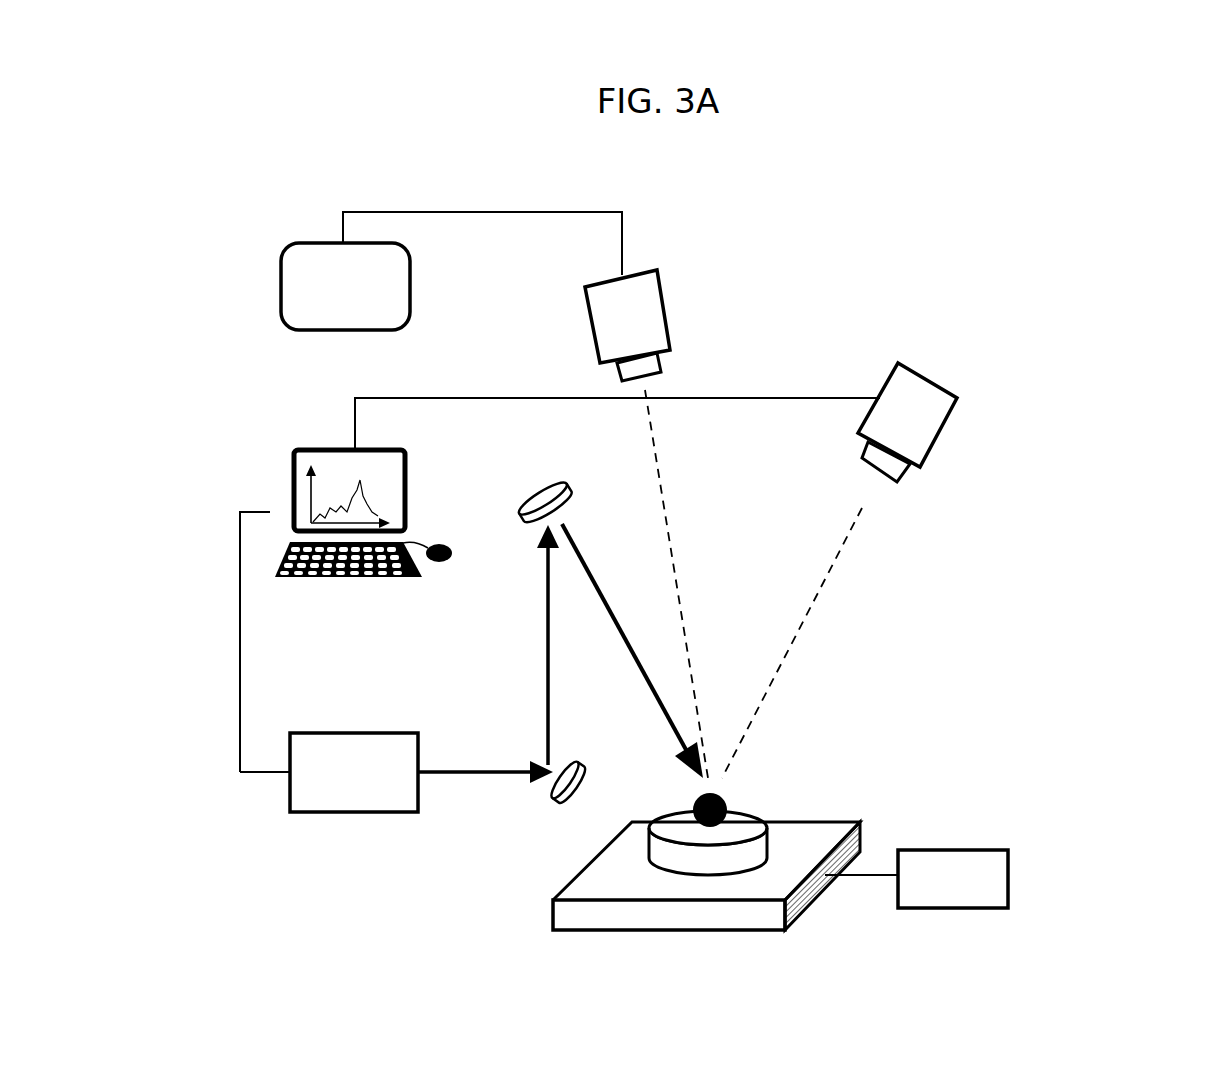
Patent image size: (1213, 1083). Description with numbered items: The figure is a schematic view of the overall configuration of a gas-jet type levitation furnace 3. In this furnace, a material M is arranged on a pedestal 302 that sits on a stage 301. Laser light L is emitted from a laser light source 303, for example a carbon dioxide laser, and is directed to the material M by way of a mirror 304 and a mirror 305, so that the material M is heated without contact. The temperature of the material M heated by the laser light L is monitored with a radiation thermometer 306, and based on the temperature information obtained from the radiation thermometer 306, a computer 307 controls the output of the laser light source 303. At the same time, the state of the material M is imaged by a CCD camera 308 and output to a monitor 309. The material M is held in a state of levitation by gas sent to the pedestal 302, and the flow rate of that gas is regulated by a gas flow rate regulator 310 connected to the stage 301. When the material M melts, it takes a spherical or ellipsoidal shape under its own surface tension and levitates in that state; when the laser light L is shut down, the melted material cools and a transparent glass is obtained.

The gas-jet type levitation furnace 3 is at (228, 133).
The stage 301 is at (550, 915).
The pedestal 302 is at (703, 852).
The laser light source 303 is at (330, 812).
The mirror 304 is at (540, 800).
The mirror 305 is at (528, 492).
The radiation thermometer 306 is at (884, 380).
The computer 307 is at (293, 448).
The CCD camera 308 is at (588, 322).
The monitor 309 is at (297, 243).
The gas flow rate regulator 310 is at (1008, 885).
The laser light L is at (470, 768).
The material M is at (735, 800).